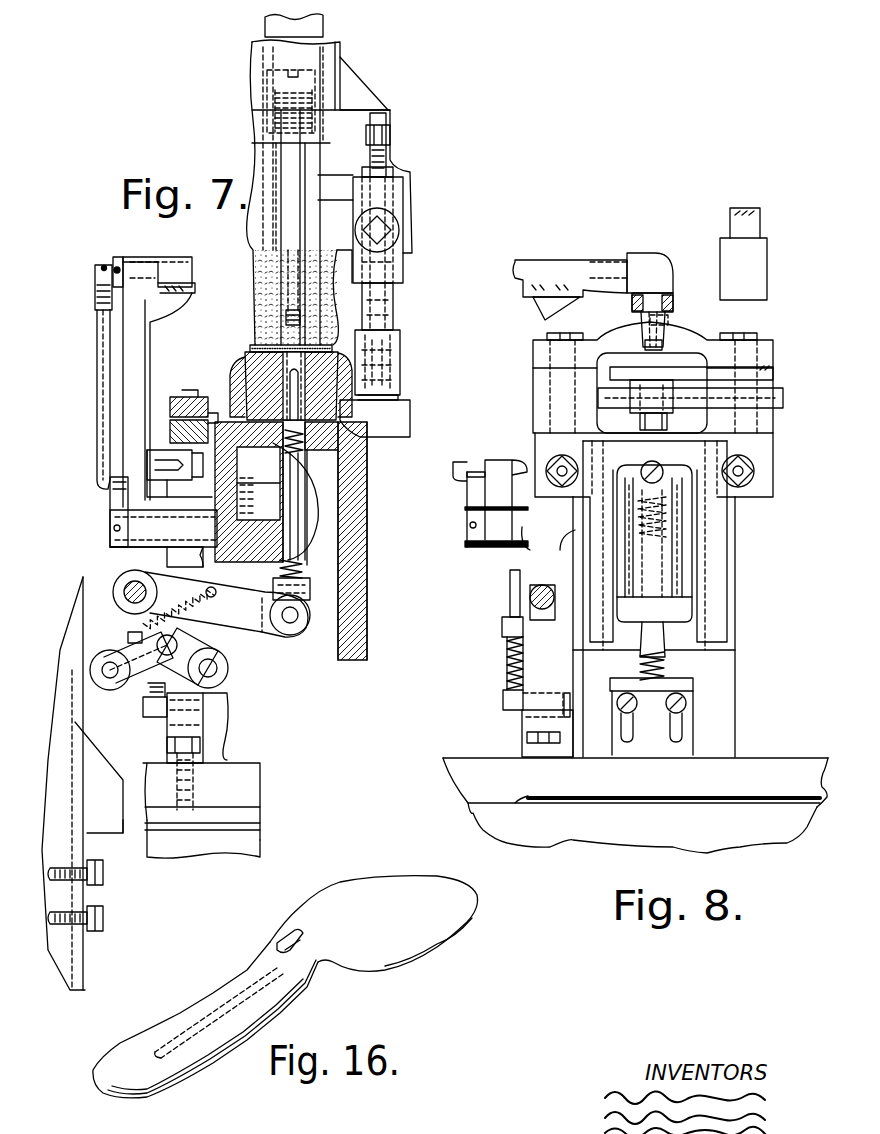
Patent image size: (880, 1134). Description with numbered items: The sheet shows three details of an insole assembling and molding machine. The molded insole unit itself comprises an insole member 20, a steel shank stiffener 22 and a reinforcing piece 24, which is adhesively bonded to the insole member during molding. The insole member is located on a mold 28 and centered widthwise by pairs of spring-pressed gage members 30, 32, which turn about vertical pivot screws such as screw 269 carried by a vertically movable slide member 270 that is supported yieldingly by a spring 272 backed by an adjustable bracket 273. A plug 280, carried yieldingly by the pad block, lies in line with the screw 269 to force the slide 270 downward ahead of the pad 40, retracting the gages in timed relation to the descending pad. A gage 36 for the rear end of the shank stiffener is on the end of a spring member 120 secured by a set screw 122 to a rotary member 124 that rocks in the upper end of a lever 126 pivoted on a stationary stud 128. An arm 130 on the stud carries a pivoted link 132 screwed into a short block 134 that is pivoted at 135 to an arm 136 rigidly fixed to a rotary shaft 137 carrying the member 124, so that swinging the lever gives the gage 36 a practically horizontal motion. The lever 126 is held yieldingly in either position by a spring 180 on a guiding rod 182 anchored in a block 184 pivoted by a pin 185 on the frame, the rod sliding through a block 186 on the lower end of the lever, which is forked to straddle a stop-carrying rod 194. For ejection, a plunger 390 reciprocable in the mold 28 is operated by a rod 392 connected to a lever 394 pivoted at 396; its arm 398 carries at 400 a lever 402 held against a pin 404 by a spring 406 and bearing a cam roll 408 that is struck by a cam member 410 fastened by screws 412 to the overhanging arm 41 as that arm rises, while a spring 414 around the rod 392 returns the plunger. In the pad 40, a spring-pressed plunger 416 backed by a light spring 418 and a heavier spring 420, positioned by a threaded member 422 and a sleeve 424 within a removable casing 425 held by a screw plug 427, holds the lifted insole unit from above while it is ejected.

In FIG. 16, the insole member 20 is at (393, 885).
In FIG. 16, the steel shank stiffener 22 is at (300, 940).
In FIG. 16, the reinforcing piece 24 is at (202, 1012).
In FIG. 7, the mold 28 is at (253, 397).
In FIG. 8, the gage members 30 is at (770, 355).
In FIG. 8, the gage members 32 is at (802, 397).
In FIG. 8, the positioning gage member 36 is at (668, 318).
In FIG. 7, the pad 40 is at (256, 275).
In FIG. 7, the overhanging arm 41 is at (80, 653).
In FIG. 8, the spring member 120 is at (640, 320).
In FIG. 8, the set screw 122 is at (668, 300).
In FIG. 8, the rotary member 124 is at (640, 253).
In FIG. 7, the lever 126 is at (153, 377).
In FIG. 8, the lever 126 is at (540, 298).
In FIG. 7, the stationary stud 128 is at (110, 523).
In FIG. 7, the arm 130 is at (113, 503).
In FIG. 7, the link 132 is at (98, 385).
In FIG. 7, the short block 134 is at (95, 300).
In FIG. 7, the pivot 135 is at (102, 263).
In FIG. 7, the arm 136 is at (117, 263).
In FIG. 7, the rotary shaft 137 is at (170, 268).
In FIG. 8, the rotary shaft 137 is at (547, 266).
In FIG. 8, the spring 180 is at (507, 652).
In FIG. 8, the guiding rod 182 is at (507, 668).
In FIG. 8, the block 184 is at (503, 703).
In FIG. 8, the pin 185 is at (571, 711).
In FIG. 8, the block 186 is at (503, 625).
In FIG. 8, the rod 194 is at (542, 587).
In FIG. 8, the pivot screw 269 is at (760, 333).
In FIG. 8, the slide member 270 is at (693, 633).
In FIG. 8, the spring 272 is at (667, 660).
In FIG. 8, the bracket 273 is at (690, 683).
In FIG. 7, the plug 280 is at (397, 370).
In FIG. 8, the plug 280 is at (766, 263).
In FIG. 7, the plunger 390 is at (280, 360).
In FIG. 7, the rod 392 is at (293, 467).
In FIG. 7, the lever 394 is at (243, 620).
In FIG. 7, the pivot 396 is at (128, 588).
In FIG. 7, the arm 398 is at (228, 666).
In FIG. 7, the pivotal connection 400 is at (174, 642).
In FIG. 7, the lever 402 is at (137, 647).
In FIG. 7, the pin 404 is at (215, 675).
In FIG. 7, the spring 406 is at (179, 605).
In FIG. 7, the cam roll 408 is at (120, 687).
In FIG. 7, the cam member 410 is at (102, 768).
In FIG. 7, the screws 412 is at (102, 920).
In FIG. 7, the spring 414 is at (300, 573).
In FIG. 7, the spring-pressed plunger 416 is at (343, 255).
In FIG. 7, the light spring 418 is at (282, 318).
In FIG. 7, the heavier spring 420 is at (280, 97).
In FIG. 7, the threaded member 422 is at (285, 80).
In FIG. 7, the sleeve 424 is at (323, 33).
In FIG. 7, the casing 425 is at (318, 137).
In FIG. 7, the screw plug 427 is at (268, 22).